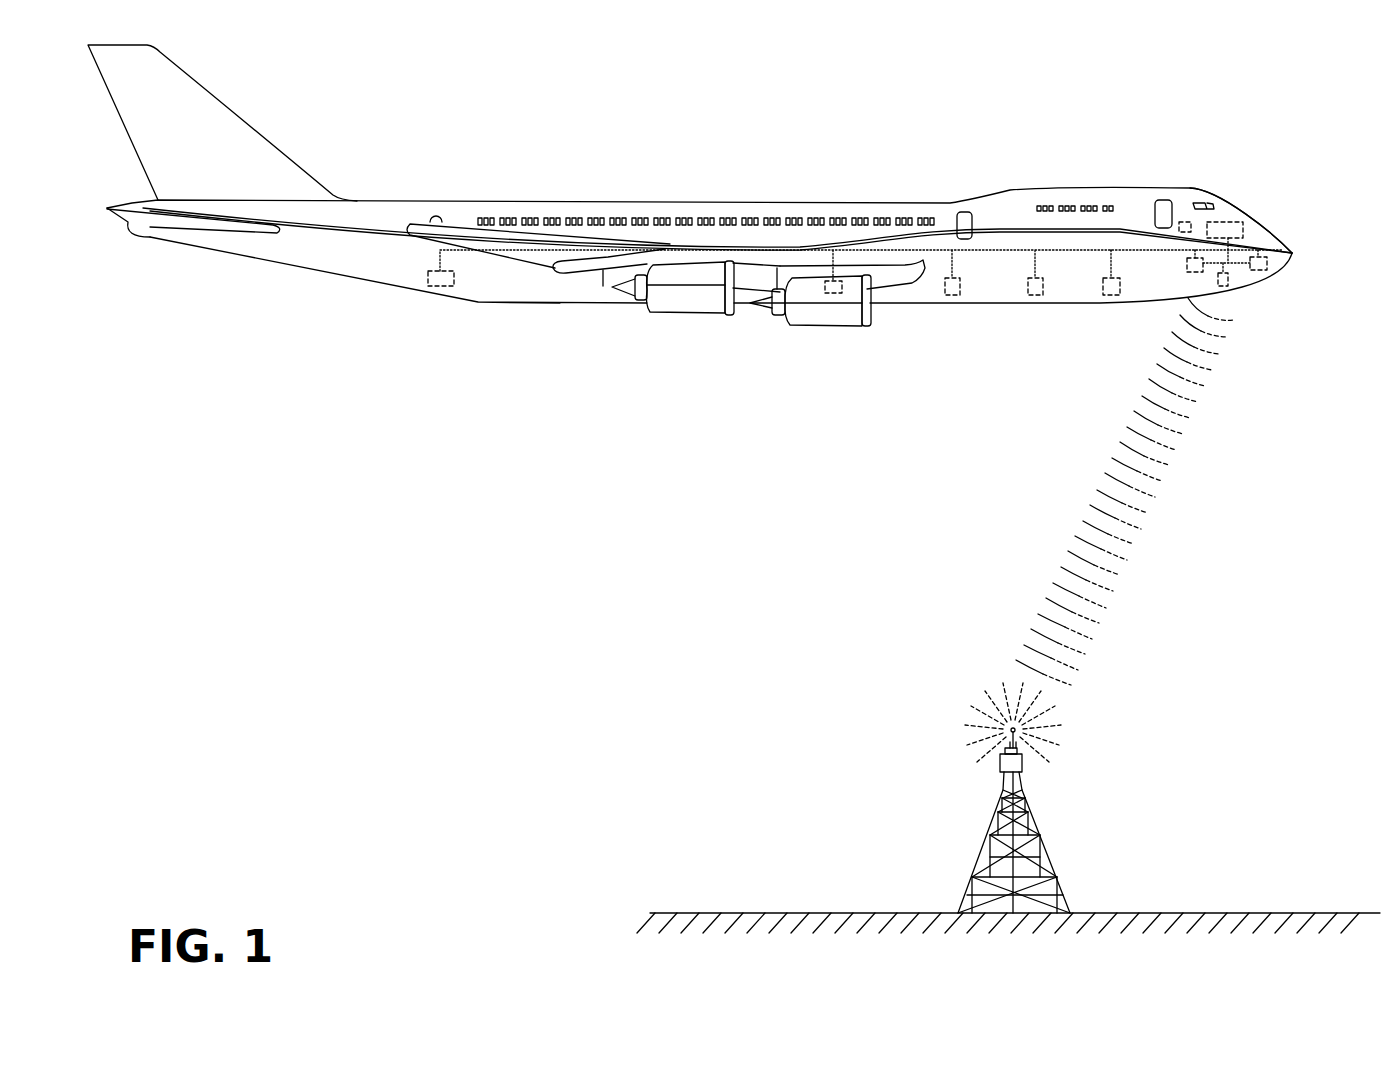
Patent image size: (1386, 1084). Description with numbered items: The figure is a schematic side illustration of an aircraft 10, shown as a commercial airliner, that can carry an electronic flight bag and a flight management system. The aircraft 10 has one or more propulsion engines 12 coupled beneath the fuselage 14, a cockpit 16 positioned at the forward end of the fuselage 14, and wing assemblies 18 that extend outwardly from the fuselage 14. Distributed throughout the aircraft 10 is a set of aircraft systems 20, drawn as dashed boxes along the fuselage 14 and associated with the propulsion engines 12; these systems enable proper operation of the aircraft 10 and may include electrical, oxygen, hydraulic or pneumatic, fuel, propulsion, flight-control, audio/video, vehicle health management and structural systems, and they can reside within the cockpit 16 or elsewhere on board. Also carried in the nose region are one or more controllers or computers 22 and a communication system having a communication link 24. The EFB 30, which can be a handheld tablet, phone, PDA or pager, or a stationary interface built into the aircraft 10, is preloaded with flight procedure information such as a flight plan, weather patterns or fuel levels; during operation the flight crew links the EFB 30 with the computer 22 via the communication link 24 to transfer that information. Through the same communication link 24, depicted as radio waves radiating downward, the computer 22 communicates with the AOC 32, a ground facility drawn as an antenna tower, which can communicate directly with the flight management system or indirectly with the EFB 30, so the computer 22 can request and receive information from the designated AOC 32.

The aircraft 10 is at (1153, 183).
The propulsion engine 12 is at (697, 300).
The fuselage 14 is at (997, 195).
The cockpit 16 is at (1237, 211).
The wing assembly 18 is at (586, 255).
The aircraft system 20 is at (440, 287).
The controller or computer 22 is at (1245, 232).
The communication link 24 is at (1226, 287).
The EFB 30 is at (1184, 222).
The AOC 32 is at (1047, 815).